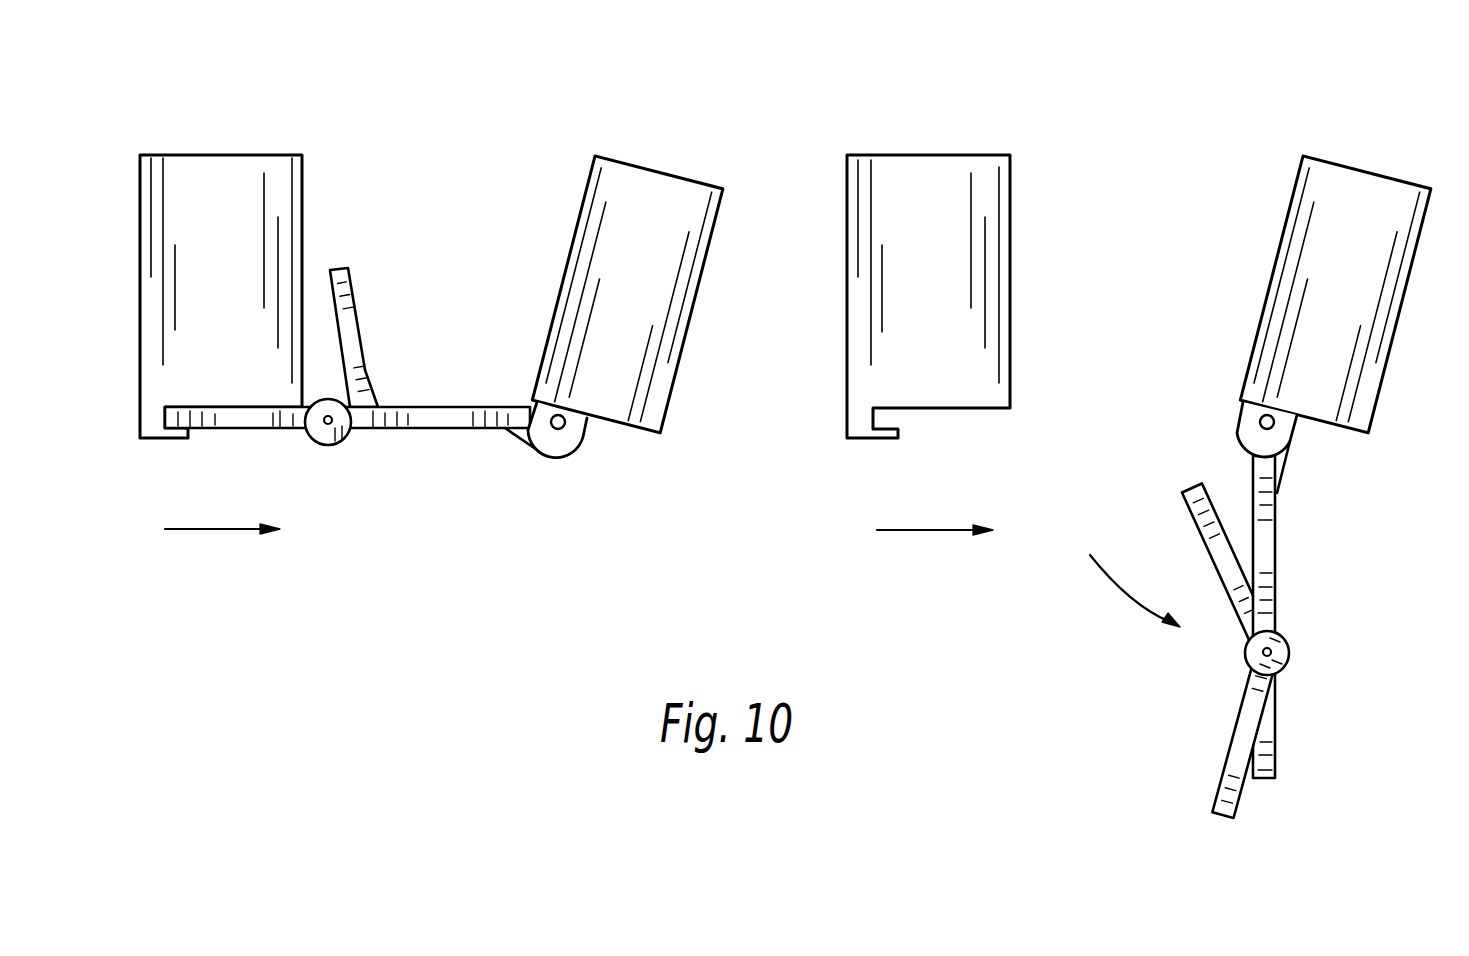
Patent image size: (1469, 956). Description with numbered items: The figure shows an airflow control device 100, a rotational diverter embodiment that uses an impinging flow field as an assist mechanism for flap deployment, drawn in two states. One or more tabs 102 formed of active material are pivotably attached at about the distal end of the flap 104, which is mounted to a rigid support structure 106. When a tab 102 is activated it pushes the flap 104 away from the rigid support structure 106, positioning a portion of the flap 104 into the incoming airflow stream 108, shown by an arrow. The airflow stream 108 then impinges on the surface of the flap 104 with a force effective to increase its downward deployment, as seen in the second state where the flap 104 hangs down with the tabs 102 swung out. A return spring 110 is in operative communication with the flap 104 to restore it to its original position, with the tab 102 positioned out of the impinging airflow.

The airflow control device 100 is at (785, 434).
The tab 102 is at (365, 322).
The flap 104 is at (440, 428).
The rigid support structure 106 is at (287, 236).
The airflow stream 108 is at (190, 531).
The return spring 110 is at (532, 446).